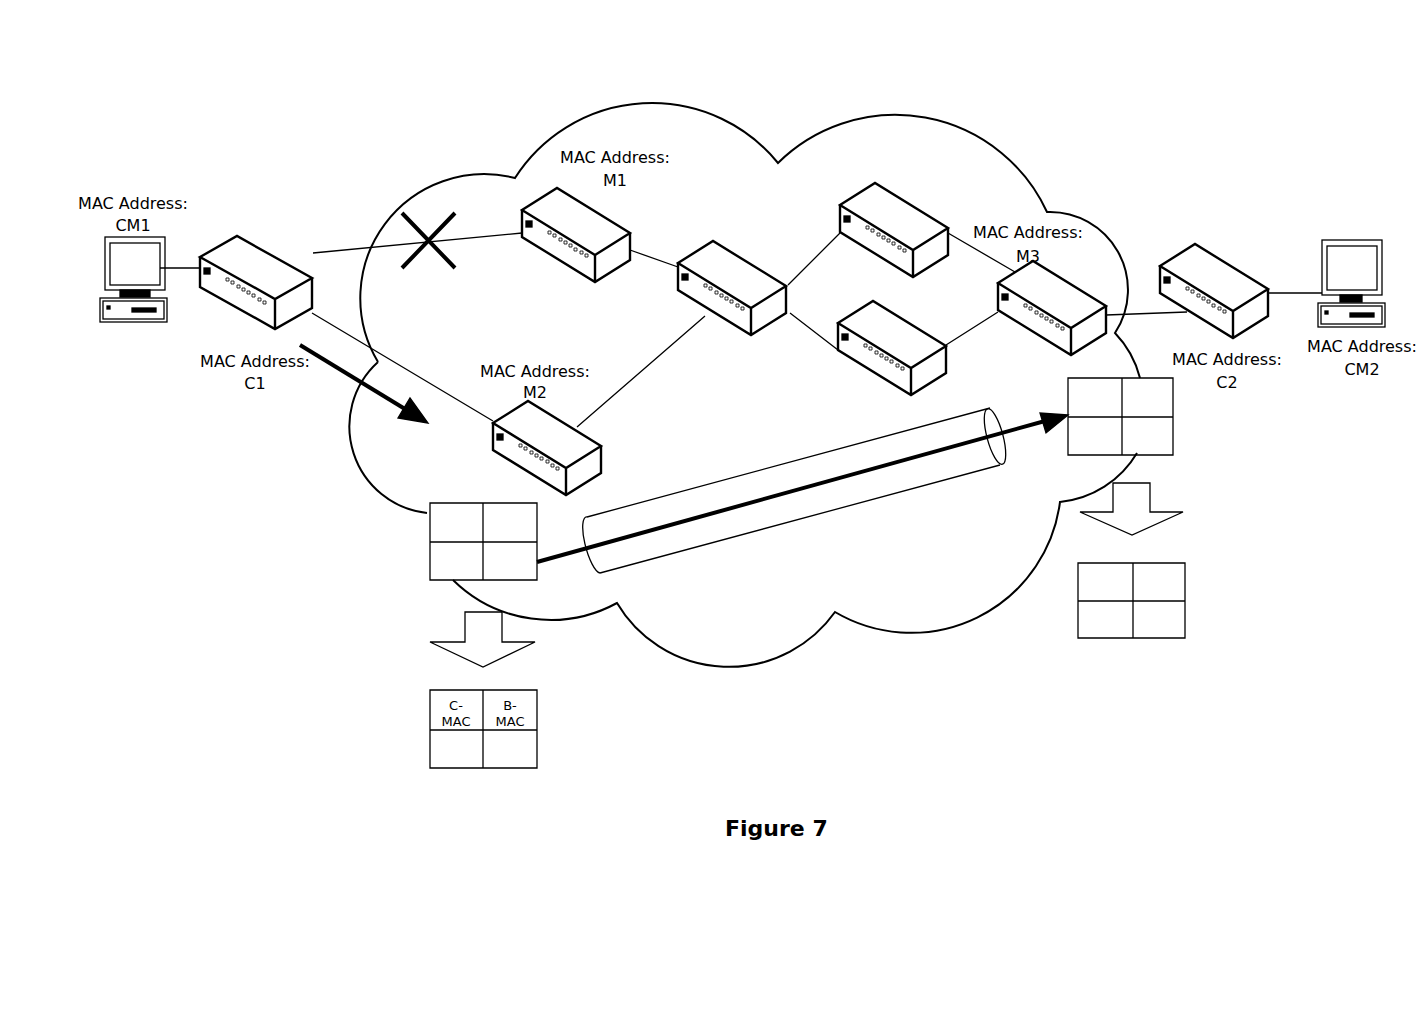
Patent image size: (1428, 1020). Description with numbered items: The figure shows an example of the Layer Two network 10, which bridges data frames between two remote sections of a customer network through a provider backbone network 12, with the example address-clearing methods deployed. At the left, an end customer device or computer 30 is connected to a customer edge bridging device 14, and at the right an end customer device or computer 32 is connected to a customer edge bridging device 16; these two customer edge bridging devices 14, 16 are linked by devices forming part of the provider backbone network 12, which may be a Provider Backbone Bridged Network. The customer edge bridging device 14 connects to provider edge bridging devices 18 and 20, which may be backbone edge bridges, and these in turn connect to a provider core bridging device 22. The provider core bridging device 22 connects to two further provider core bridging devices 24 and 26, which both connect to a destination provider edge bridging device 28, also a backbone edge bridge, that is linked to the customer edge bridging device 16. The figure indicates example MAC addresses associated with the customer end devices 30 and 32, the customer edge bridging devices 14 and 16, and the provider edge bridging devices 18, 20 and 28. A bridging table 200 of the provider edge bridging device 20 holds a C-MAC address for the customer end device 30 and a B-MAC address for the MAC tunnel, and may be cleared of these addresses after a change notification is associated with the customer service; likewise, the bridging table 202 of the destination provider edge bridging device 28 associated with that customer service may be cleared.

The network 10 is at (913, 73).
The provider backbone network 12 is at (1017, 162).
The customer edge bridging device 14 is at (230, 238).
The customer edge bridging device 16 is at (1218, 252).
The provider edge bridging device 18 is at (540, 195).
The provider edge bridging device 20 is at (607, 442).
The provider core bridging device 22 is at (702, 247).
The provider core bridging device 24 is at (862, 187).
The provider core bridging device 26 is at (868, 372).
The provider edge bridging device 28 is at (1080, 283).
The end customer device or computer 30 is at (142, 323).
The end customer device or computer 32 is at (1348, 238).
The bridging table 200 is at (430, 543).
The bridging table 202 is at (1173, 417).